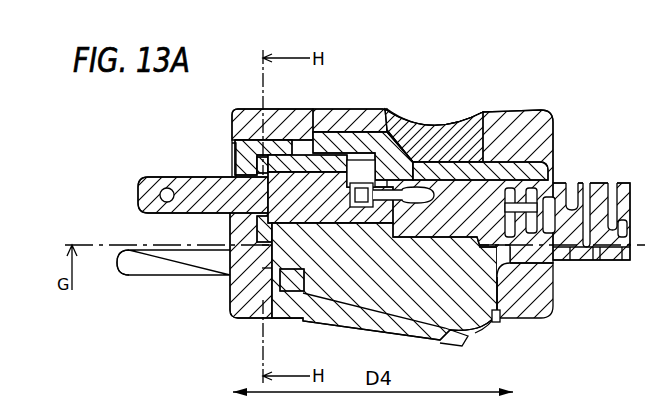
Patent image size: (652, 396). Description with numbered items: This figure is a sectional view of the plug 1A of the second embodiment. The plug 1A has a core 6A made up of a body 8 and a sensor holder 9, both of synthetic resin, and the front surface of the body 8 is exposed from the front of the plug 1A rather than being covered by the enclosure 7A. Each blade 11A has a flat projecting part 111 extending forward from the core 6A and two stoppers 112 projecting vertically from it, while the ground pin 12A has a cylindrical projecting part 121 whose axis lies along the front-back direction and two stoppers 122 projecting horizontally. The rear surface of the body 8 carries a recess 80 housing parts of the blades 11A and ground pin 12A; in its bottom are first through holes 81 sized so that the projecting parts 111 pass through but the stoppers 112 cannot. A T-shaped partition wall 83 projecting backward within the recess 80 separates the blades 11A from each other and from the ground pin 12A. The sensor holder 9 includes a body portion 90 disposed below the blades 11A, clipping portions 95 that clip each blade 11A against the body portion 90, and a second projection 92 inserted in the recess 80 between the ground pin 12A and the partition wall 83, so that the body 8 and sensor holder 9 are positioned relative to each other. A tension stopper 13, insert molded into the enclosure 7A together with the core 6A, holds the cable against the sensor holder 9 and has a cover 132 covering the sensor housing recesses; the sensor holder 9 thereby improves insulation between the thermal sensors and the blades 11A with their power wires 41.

The plug 1A is at (518, 110).
The enclosure 7A is at (530, 300).
The core 6A is at (460, 333).
The body 8 is at (262, 300).
The sensor holder 9 is at (496, 323).
The tension stopper 13 is at (452, 168).
The power wire 41 is at (408, 138).
The recess 80 is at (263, 163).
The first through holes 81 is at (229, 172).
The partition wall 83 is at (268, 272).
The body portion 90 is at (390, 190).
The second projection 92 is at (270, 248).
The clipping portions 95 is at (298, 163).
The projecting part 111 is at (195, 187).
The blade 11A is at (148, 177).
The stoppers 112 is at (262, 158).
The projecting part 121 is at (147, 276).
The ground pin 12A is at (118, 268).
The stoppers 122 is at (292, 290).
The cover 132 is at (345, 145).